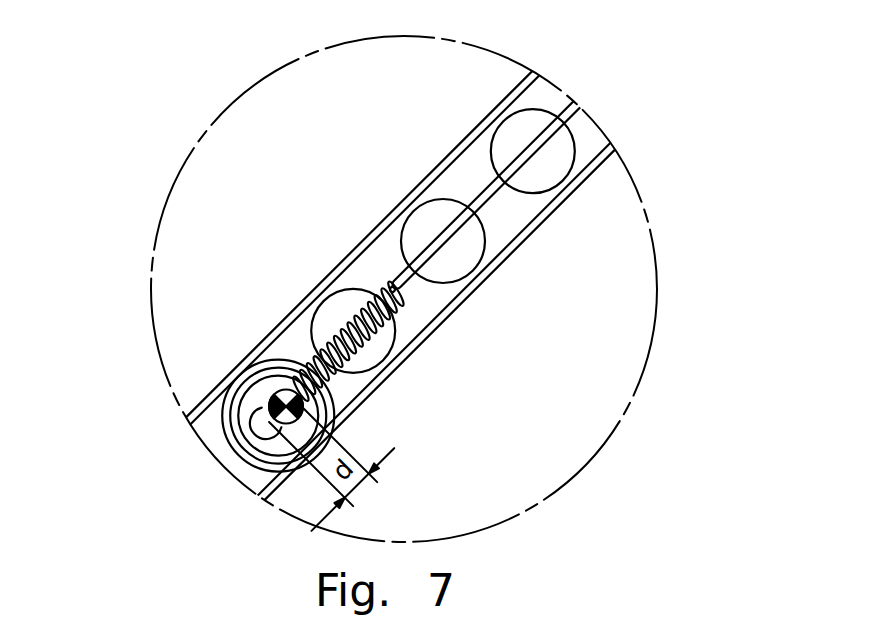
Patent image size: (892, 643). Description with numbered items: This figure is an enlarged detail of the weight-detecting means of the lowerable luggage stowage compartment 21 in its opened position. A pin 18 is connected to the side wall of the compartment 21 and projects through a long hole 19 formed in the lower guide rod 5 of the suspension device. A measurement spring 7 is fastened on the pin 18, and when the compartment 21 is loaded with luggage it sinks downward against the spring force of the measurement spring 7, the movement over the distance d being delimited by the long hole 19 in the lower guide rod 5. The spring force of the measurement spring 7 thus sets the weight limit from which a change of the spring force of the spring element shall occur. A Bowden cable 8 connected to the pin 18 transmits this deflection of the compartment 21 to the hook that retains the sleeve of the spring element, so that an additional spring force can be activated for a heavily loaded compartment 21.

The lower guide rod 5 is at (443, 289).
The measurement spring 7 is at (513, 367).
The Bowden cable 8 is at (564, 147).
The pin 18 is at (275, 440).
The long hole 19 is at (166, 343).
The luggage stowage compartment 21 is at (258, 212).